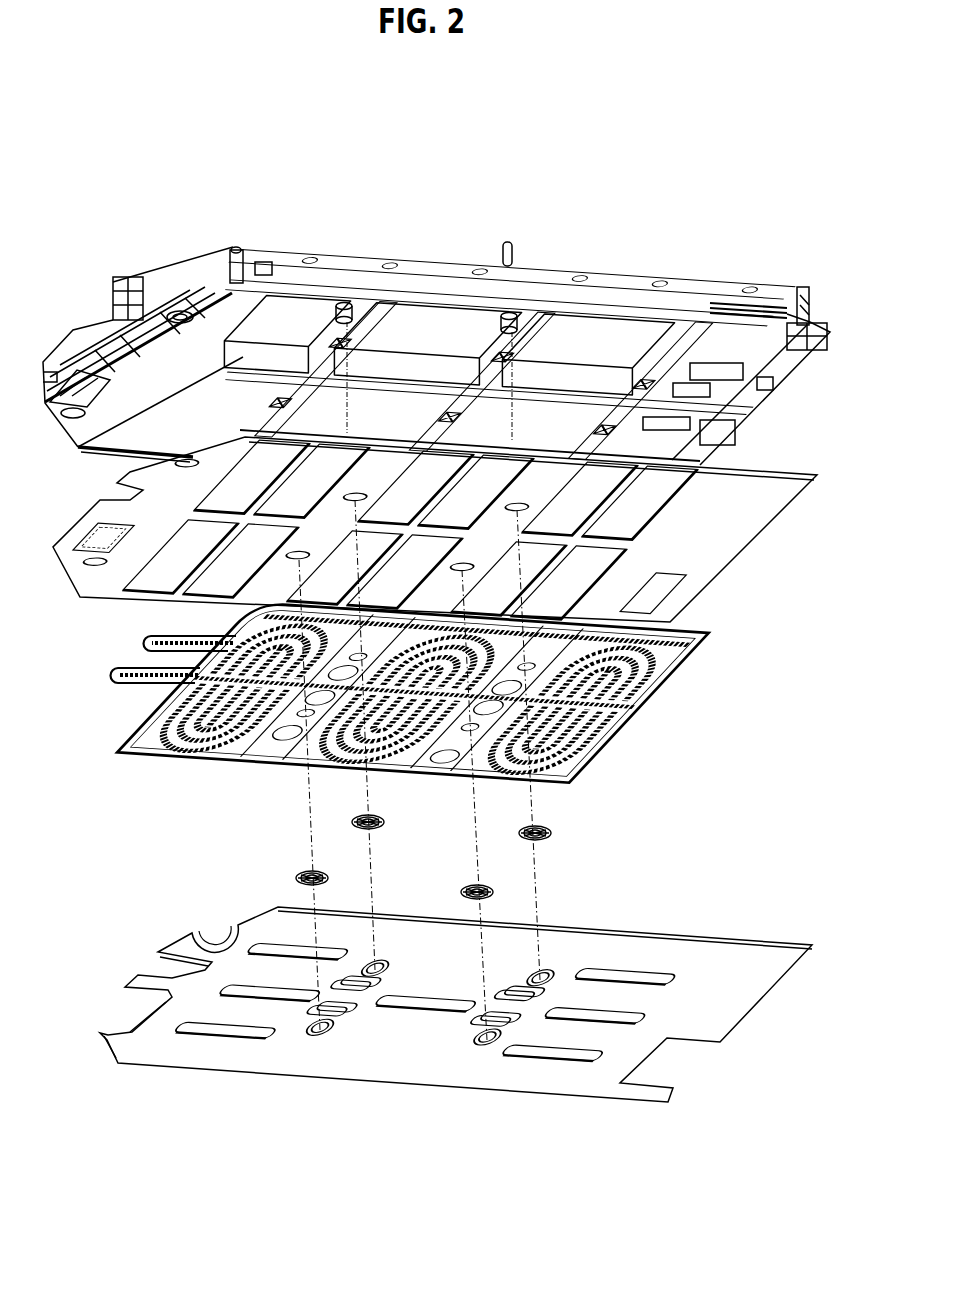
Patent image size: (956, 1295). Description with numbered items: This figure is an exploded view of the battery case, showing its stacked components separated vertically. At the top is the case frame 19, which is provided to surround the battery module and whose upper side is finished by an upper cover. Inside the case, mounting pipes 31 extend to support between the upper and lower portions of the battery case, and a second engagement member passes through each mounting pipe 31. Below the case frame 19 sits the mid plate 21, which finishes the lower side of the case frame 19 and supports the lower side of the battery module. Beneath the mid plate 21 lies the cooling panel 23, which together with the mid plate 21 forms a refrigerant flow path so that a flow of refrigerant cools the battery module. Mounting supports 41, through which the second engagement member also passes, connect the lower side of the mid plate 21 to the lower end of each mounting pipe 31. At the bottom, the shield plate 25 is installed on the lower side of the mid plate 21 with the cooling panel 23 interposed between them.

The case frame 19 is at (186, 273).
The mounting pipe 31 is at (344, 302).
The mid plate 21 is at (722, 542).
The cooling panel 23 is at (614, 736).
The mounting support 41 is at (297, 880).
The shield plate 25 is at (462, 1080).